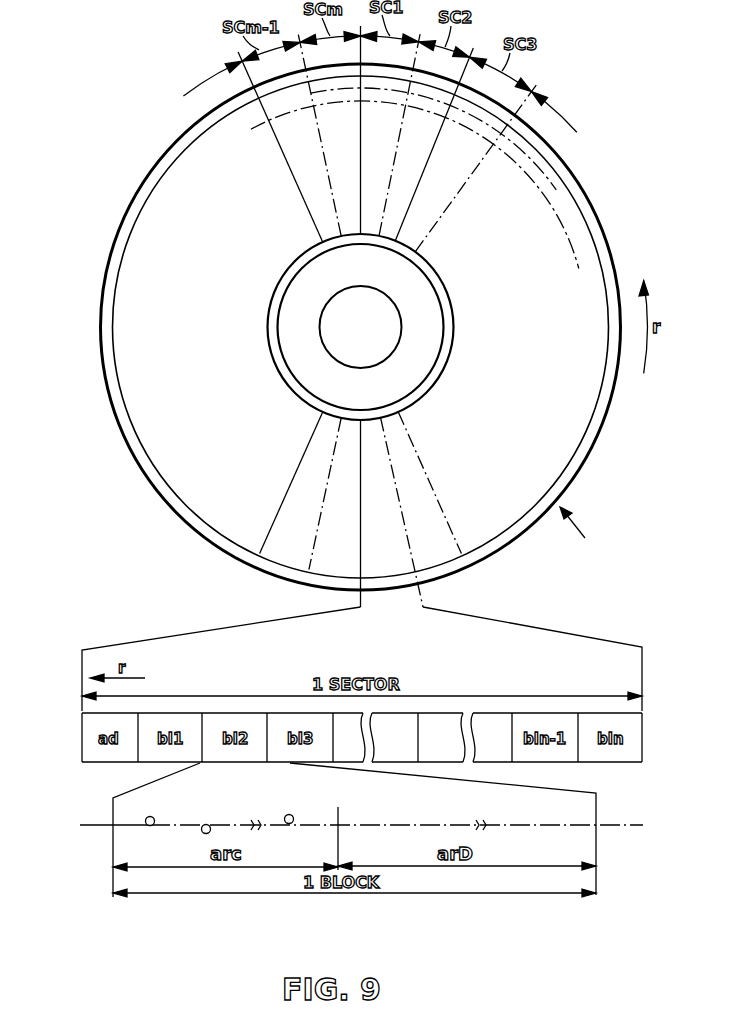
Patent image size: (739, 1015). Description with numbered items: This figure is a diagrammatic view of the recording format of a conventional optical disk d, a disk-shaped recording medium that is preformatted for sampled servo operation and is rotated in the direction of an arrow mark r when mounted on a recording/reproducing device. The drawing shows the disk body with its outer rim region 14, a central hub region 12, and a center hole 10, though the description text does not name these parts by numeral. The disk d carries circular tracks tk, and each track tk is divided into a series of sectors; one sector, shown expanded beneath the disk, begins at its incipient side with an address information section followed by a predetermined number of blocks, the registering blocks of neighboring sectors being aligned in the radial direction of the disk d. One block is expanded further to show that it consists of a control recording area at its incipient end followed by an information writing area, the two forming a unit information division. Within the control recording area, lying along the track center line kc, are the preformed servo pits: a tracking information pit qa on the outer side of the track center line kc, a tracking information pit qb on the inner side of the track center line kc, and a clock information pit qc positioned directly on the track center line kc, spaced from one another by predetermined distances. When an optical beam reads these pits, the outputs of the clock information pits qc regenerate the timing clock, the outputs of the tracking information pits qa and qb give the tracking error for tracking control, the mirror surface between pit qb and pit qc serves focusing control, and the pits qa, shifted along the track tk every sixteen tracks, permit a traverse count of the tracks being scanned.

The center hole 10 is at (326, 350).
The hub 12 is at (286, 330).
The disk 14 is at (558, 443).
The track tk is at (548, 184).
The optical disk d is at (579, 533).
The track center line kc is at (349, 826).
The tracking information pit qa is at (153, 817).
The tracking information pit qb is at (209, 825).
The clock information pit qc is at (291, 815).